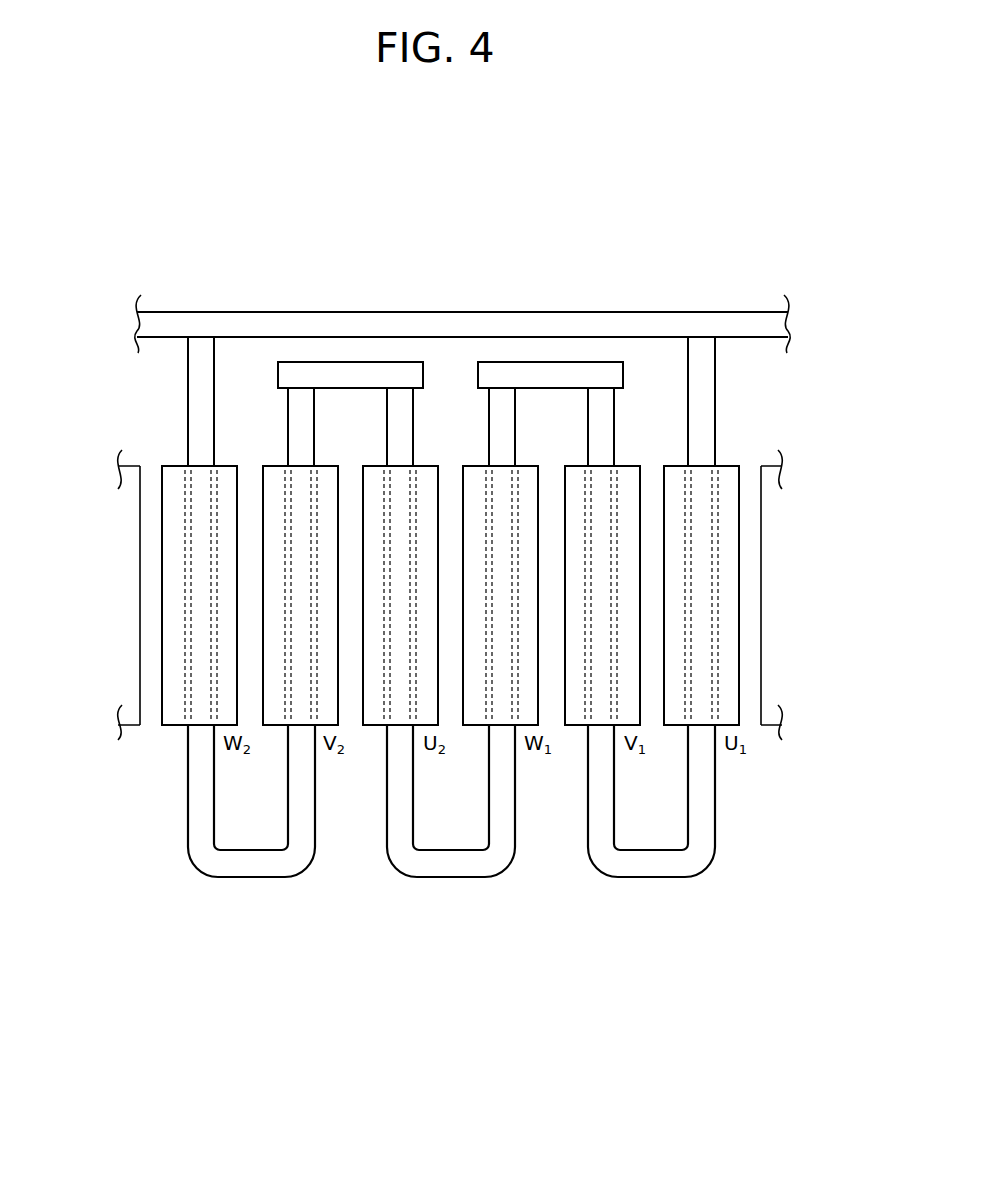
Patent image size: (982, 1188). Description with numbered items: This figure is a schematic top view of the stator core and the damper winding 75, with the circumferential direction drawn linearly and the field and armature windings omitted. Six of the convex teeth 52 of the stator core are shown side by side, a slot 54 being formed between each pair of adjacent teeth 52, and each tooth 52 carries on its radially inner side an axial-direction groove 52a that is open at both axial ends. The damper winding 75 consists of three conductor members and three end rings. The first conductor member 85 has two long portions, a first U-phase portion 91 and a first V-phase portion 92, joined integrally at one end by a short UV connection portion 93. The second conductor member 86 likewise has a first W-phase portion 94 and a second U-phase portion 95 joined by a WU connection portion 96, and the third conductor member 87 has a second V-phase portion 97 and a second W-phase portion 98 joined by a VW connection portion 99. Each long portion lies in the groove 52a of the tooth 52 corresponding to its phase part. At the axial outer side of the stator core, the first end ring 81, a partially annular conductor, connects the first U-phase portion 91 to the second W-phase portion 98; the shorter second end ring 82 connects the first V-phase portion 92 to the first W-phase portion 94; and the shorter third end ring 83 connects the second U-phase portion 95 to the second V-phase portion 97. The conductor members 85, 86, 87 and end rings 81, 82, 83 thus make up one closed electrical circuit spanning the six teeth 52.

The damper winding 75 is at (141, 399).
The first end ring 81 is at (656, 317).
The second end ring 82 is at (555, 368).
The third end ring 83 is at (358, 368).
The tooth 52 is at (725, 473).
The axial-direction groove 52a is at (190, 692).
The slot 54 is at (652, 481).
The first conductor member 85 is at (675, 931).
The second conductor member 86 is at (468, 931).
The third conductor member 87 is at (272, 931).
The first U-phase portion 91 is at (707, 802).
The first V-phase portion 92 is at (598, 823).
The UV connection portion 93 is at (635, 867).
The first W-phase portion 94 is at (503, 807).
The second U-phase portion 95 is at (397, 822).
The WU connection portion 96 is at (433, 867).
The second V-phase portion 97 is at (302, 807).
The second W-phase portion 98 is at (197, 826).
The VW connection portion 99 is at (237, 867).